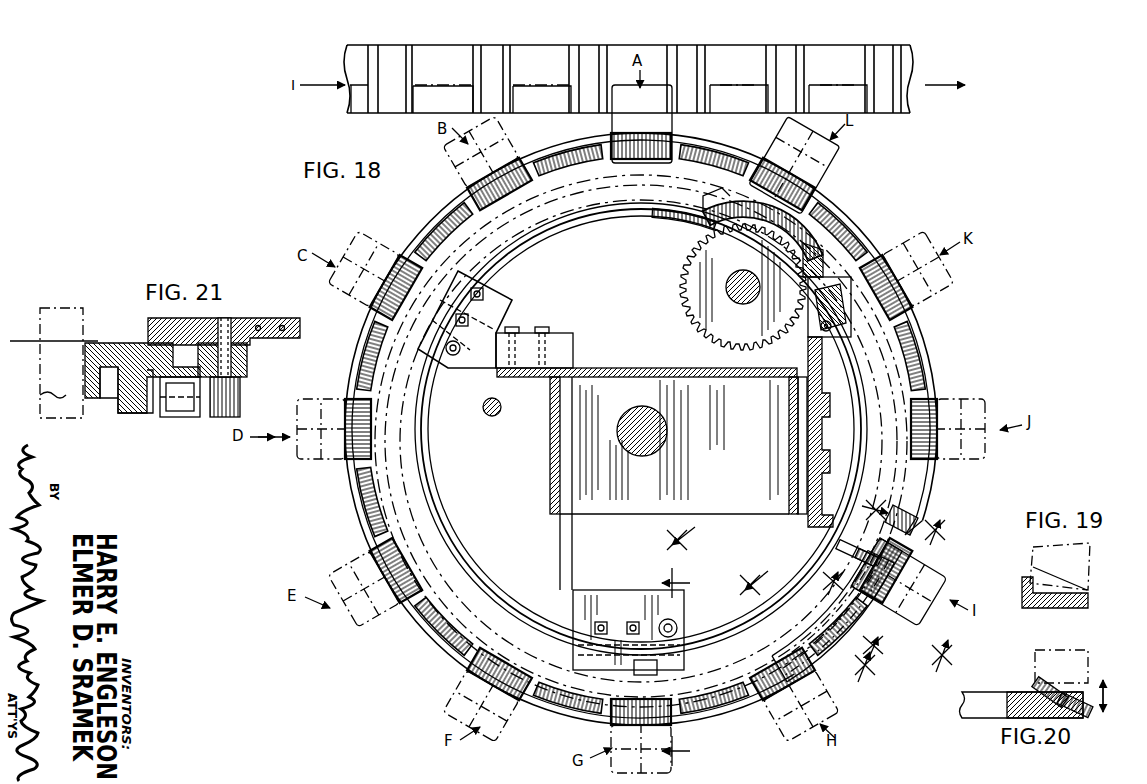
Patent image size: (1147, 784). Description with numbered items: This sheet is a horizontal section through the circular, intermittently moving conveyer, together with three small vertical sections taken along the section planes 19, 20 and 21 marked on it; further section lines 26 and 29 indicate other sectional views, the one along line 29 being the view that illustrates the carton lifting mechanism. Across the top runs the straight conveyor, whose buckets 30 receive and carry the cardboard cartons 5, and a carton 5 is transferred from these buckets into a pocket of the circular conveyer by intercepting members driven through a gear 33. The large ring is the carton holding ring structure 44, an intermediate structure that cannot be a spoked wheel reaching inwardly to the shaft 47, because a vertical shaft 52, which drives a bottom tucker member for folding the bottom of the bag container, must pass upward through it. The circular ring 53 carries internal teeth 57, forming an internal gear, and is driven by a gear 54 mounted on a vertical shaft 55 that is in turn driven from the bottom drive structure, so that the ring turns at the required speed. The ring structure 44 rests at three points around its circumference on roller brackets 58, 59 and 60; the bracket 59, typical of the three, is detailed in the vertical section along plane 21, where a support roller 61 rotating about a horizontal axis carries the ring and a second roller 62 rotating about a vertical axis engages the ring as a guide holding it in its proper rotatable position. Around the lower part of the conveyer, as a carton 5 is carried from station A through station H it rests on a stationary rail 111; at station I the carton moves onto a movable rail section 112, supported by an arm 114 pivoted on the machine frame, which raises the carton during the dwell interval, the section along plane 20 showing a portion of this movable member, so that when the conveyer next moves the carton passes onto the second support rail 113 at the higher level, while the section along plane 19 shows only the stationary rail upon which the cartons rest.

In FIG. 18, the cardboard carton 5 is at (530, 88).
In FIG. 21, the cardboard carton 5 is at (62, 318).
In FIG. 18, the bucket 30 is at (836, 68).
In FIG. 21, the gear 33 is at (86, 345).
In FIG. 21, the ring structure 44 is at (110, 358).
In FIG. 18, the shaft 47 is at (644, 456).
In FIG. 18, the vertical shaft 52 is at (491, 416).
In FIG. 21, the circular ring 53 is at (120, 398).
In FIG. 18, the gear 54 is at (688, 292).
In FIG. 18, the vertical shaft 55 is at (735, 295).
In FIG. 18, the internal teeth 57 is at (706, 208).
In FIG. 21, the internal teeth 57 is at (150, 412).
In FIG. 18, the roller bracket 58 is at (510, 300).
In FIG. 18, the roller support bracket 59 is at (598, 592).
In FIG. 21, the roller support bracket 59 is at (256, 318).
In FIG. 18, the roller bracket 60 is at (806, 325).
In FIG. 21, the support roller 61 is at (176, 408).
In FIG. 21, the second roller 62 is at (245, 368).
In FIG. 18, the stationary rail 111 is at (875, 640).
In FIG. 18, the movable rail section 112 is at (936, 552).
In FIG. 20, the movable rail section 112 is at (1090, 708).
In FIG. 18, the second support rail 113 is at (888, 522).
In FIG. 19, the second support rail 113 is at (1089, 600).
In FIG. 20, the arm 114 is at (983, 706).
In FIG. 18, the section plane 19 is at (901, 521).
In FIG. 18, the section plane 20 is at (851, 610).
In FIG. 18, the section plane 21 is at (689, 667).
In FIG. 18, the section line 26 is at (723, 555).
In FIG. 18, the section plane 29 is at (914, 665).